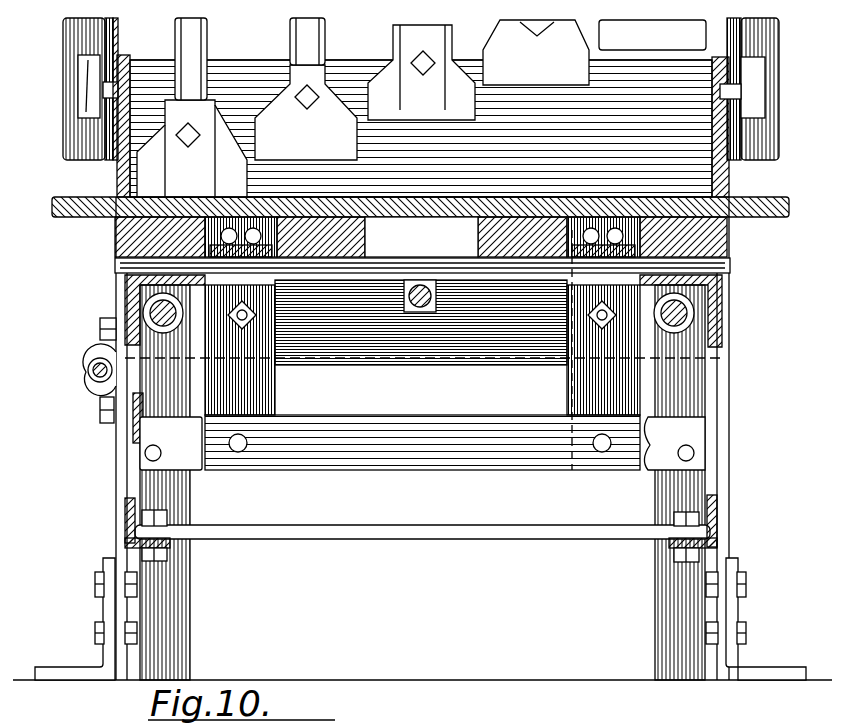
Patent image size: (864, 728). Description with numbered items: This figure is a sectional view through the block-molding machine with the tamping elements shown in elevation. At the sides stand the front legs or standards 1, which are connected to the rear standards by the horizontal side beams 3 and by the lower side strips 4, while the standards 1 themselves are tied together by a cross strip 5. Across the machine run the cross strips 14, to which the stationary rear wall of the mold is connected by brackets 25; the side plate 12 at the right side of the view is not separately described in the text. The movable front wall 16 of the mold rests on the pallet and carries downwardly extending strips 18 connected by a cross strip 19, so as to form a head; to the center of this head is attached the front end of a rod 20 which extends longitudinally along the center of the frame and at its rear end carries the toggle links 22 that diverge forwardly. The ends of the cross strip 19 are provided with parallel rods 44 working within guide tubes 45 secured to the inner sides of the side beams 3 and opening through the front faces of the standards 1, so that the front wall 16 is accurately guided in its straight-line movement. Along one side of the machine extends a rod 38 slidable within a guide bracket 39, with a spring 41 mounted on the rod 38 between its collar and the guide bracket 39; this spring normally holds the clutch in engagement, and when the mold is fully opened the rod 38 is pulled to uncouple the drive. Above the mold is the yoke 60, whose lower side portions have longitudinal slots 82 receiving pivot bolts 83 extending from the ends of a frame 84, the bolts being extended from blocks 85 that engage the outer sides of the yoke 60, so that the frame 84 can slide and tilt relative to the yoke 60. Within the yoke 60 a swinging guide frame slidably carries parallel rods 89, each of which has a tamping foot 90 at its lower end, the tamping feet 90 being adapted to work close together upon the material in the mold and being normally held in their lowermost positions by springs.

The front legs or standards 1 is at (157, 612).
The horizontal side beams 3 is at (127, 284).
The lower side strips 4 is at (124, 517).
The cross strip 5 is at (177, 465).
The right side plate 12 is at (722, 182).
The cross strips 14 is at (714, 267).
The front wall 16 is at (690, 132).
The downwardly extending strips 18 is at (260, 382).
The cross strip 19 is at (532, 332).
The rod 20 is at (421, 308).
The toggle links 22 is at (120, 172).
The brackets 25 is at (115, 252).
The rod 38 is at (93, 379).
The guide bracket 39 is at (102, 396).
The spring 41 is at (92, 362).
The parallel rods 44 is at (150, 311).
The guide tubes 45 is at (143, 303).
The yoke 60 is at (114, 30).
The longitudinal slots 82 is at (112, 50).
The pivot bolts 83 is at (75, 90).
The frame 84 is at (232, 66).
The blocks 85 is at (85, 62).
The parallel rods 89 is at (196, 44).
The tamping foot 90 is at (443, 113).